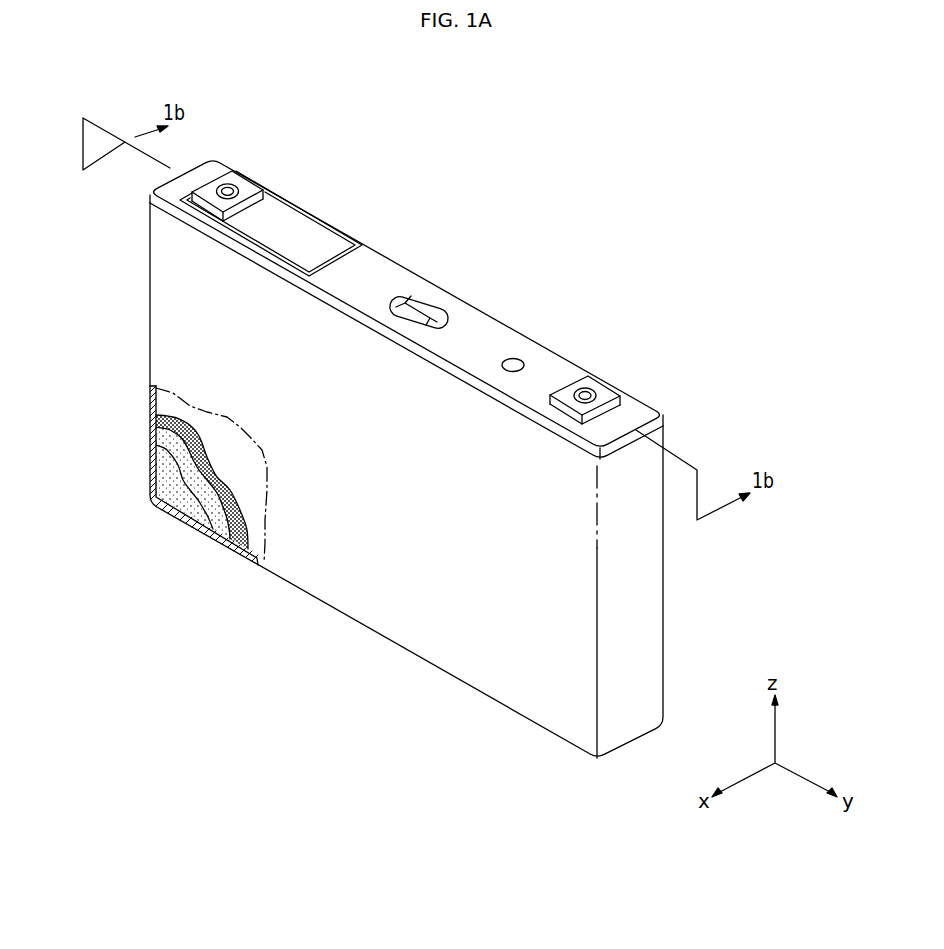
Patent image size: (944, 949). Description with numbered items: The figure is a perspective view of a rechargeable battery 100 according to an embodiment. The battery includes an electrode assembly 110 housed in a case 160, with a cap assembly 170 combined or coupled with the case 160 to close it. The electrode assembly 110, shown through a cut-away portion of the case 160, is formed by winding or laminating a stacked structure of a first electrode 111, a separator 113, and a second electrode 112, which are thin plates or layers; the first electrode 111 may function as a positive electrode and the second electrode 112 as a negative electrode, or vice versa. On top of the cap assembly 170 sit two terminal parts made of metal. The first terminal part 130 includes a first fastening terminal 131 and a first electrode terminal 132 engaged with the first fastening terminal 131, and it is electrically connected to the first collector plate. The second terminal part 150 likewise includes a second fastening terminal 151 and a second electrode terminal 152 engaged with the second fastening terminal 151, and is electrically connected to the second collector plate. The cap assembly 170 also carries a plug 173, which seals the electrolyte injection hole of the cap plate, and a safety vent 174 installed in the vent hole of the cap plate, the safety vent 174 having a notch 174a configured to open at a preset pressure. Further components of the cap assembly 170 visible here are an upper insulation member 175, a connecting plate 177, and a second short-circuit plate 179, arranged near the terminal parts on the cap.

The rechargeable battery 100 is at (722, 140).
The electrode assembly 110 is at (179, 546).
The first electrode 111 is at (160, 536).
The second electrode 112 is at (238, 527).
The separator 113 is at (211, 513).
The first terminal part 130 is at (612, 340).
The first fastening terminal 131 is at (595, 353).
The first electrode terminal 132 is at (606, 390).
The second terminal part 150 is at (244, 132).
The second fastening terminal 151 is at (224, 145).
The second electrode terminal 152 is at (262, 181).
The case 160 is at (378, 647).
The cap assembly 170 is at (387, 253).
The plug 173 is at (511, 358).
The safety vent 174 is at (450, 266).
The notch 174a is at (427, 318).
The upper insulation member 175 is at (330, 222).
The connecting plate 177 is at (562, 414).
The second short-circuit plate 179 is at (279, 226).